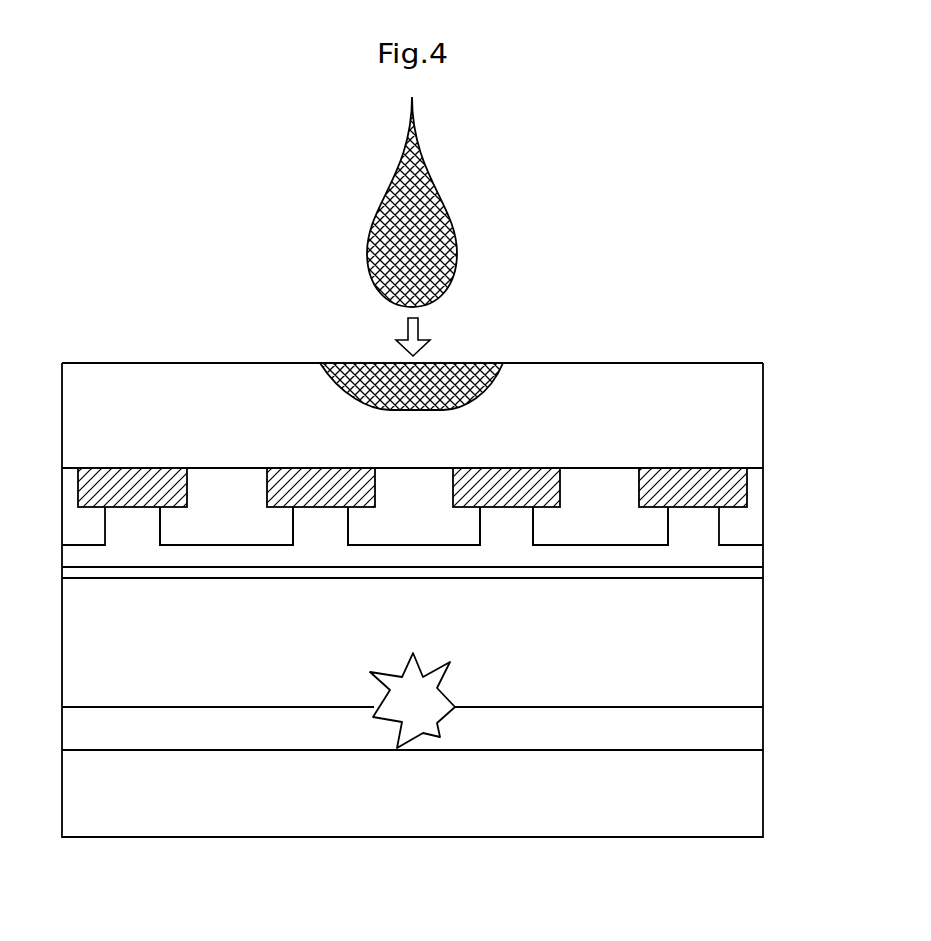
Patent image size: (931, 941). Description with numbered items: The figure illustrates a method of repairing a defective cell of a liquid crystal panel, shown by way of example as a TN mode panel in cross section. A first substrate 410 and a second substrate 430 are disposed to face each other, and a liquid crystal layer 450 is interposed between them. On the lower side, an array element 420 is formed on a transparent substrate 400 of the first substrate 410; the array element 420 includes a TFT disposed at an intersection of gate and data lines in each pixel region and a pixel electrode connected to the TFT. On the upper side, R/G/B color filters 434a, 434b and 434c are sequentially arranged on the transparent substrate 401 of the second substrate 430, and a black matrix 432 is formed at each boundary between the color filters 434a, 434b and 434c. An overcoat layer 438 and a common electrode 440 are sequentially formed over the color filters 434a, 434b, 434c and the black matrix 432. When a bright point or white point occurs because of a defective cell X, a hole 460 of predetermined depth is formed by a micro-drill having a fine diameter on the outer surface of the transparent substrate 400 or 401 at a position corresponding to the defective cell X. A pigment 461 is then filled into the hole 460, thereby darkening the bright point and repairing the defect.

The transparent substrate 400 is at (410, 790).
The transparent substrate 401 is at (515, 450).
The first substrate 410 is at (764, 708).
The array element 420 is at (707, 727).
The second substrate 430 is at (764, 363).
The black matrix 432 is at (123, 490).
The R color filter 434a is at (258, 528).
The G color filter 434b is at (415, 528).
The B color filter 434c is at (601, 527).
The overcoat layer 438 is at (648, 557).
The common electrode 440 is at (705, 573).
The liquid crystal layer 450 is at (764, 579).
The hole 460 is at (480, 390).
The pigment 461 is at (493, 363).
The defective cell X is at (415, 720).